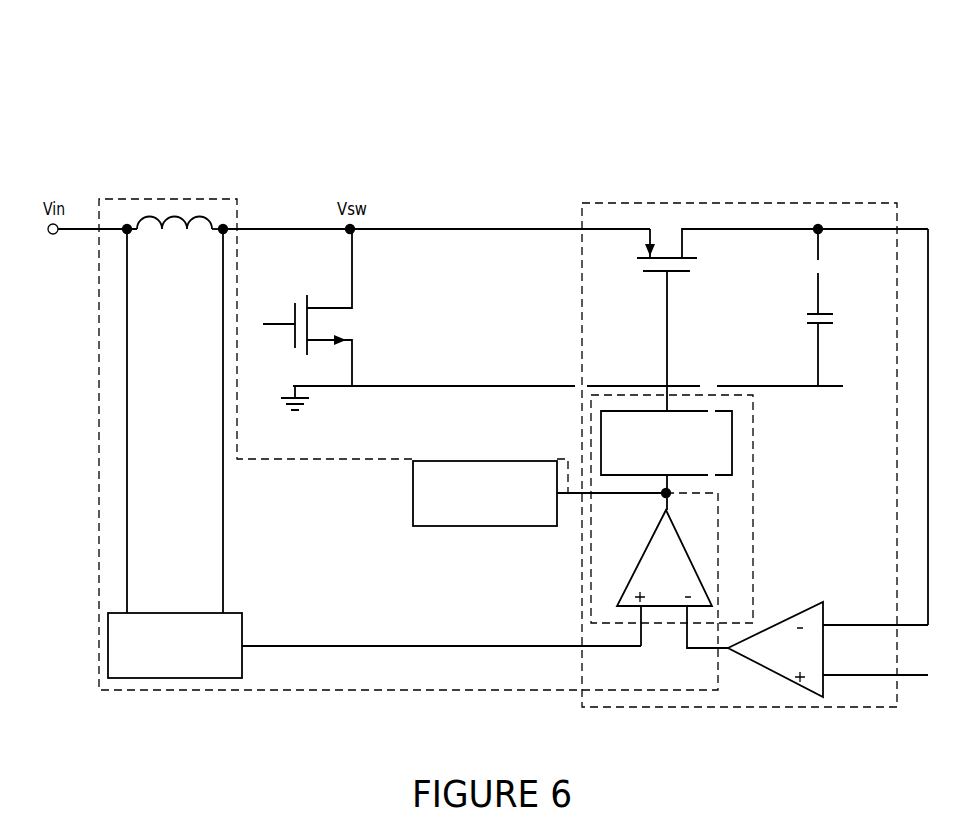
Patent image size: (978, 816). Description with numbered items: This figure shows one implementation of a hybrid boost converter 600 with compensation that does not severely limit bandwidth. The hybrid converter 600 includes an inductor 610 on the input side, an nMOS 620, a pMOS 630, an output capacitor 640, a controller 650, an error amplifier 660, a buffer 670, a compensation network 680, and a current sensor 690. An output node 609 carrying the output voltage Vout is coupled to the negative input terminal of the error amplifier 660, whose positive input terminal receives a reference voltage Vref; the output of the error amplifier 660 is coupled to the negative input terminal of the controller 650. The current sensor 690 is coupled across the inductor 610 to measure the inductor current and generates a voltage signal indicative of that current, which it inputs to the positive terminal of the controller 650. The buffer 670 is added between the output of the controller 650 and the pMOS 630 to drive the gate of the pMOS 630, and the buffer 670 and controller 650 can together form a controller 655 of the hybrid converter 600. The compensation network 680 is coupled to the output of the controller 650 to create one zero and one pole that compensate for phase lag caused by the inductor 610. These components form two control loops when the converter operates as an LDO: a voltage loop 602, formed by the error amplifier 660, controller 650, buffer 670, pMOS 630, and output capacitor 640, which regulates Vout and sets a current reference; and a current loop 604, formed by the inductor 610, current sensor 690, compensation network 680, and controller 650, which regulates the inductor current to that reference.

The hybrid converter 600 is at (862, 108).
The voltage loop 602 is at (897, 521).
The current loop 604 is at (357, 694).
The output node 609 is at (816, 225).
The inductor 610 is at (200, 217).
The nMOS 620 is at (315, 290).
The pMOS 630 is at (650, 220).
The output capacitor 640 is at (800, 298).
The controller 650 is at (646, 545).
The controller 655 is at (590, 593).
The error amplifier 660 is at (782, 677).
The buffer 670 is at (733, 443).
The compensation network 680 is at (437, 461).
The current sensor 690 is at (176, 678).